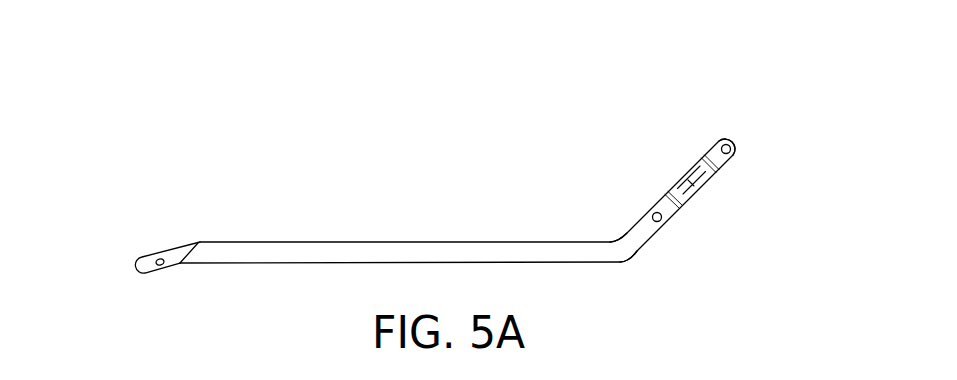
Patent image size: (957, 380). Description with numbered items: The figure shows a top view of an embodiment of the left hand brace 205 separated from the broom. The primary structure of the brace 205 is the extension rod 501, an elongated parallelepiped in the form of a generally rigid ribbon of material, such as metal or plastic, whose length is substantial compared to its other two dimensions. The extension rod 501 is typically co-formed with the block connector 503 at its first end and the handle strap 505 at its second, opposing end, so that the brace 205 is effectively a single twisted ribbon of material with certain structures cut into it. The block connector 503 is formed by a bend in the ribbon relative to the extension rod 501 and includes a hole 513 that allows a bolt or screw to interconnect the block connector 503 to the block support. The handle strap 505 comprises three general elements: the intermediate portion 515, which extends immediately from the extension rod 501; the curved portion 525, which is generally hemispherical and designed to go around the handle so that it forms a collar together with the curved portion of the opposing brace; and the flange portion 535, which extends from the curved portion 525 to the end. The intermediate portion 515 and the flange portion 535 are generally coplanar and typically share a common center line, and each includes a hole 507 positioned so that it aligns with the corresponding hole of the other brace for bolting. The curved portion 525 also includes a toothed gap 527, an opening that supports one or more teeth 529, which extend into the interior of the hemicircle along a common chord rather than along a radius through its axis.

The brace 205 is at (582, 71).
The extension rod 501 is at (360, 242).
The block connector 503 is at (183, 245).
The handle strap 505 is at (637, 252).
The hole 507 is at (652, 214).
The hole 513 is at (155, 256).
The intermediate portion 515 is at (627, 232).
The curved portion 525 is at (678, 182).
The toothed gap 527 is at (691, 169).
The teeth 529 is at (687, 197).
The flange portion 535 is at (735, 153).